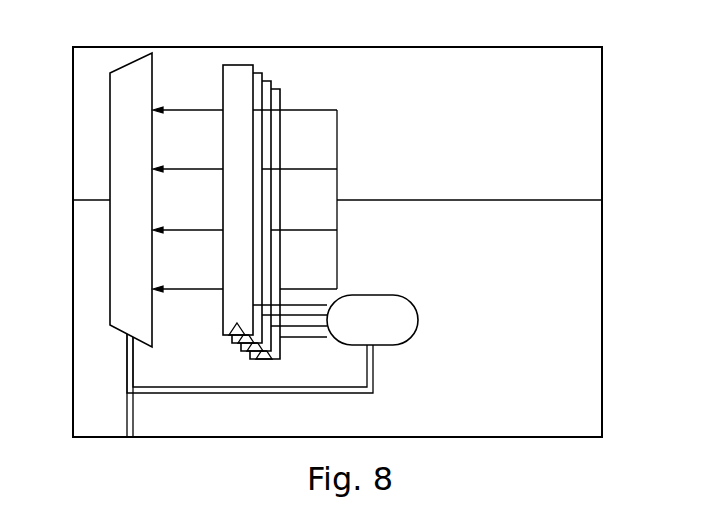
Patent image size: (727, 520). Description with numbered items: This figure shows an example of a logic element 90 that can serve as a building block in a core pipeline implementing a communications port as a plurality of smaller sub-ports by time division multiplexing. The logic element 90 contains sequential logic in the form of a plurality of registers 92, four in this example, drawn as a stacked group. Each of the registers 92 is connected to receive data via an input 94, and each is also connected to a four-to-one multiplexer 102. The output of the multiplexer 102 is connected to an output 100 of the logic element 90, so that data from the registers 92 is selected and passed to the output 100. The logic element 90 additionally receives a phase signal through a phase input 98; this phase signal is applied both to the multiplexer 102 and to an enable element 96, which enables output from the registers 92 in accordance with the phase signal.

The logic element 90 is at (592, 105).
The registers 92 is at (238, 64).
The input 94 is at (583, 198).
The enable element 96 is at (370, 302).
The phase input 98 is at (127, 428).
The output 100 is at (93, 198).
The multiplexer 102 is at (133, 68).